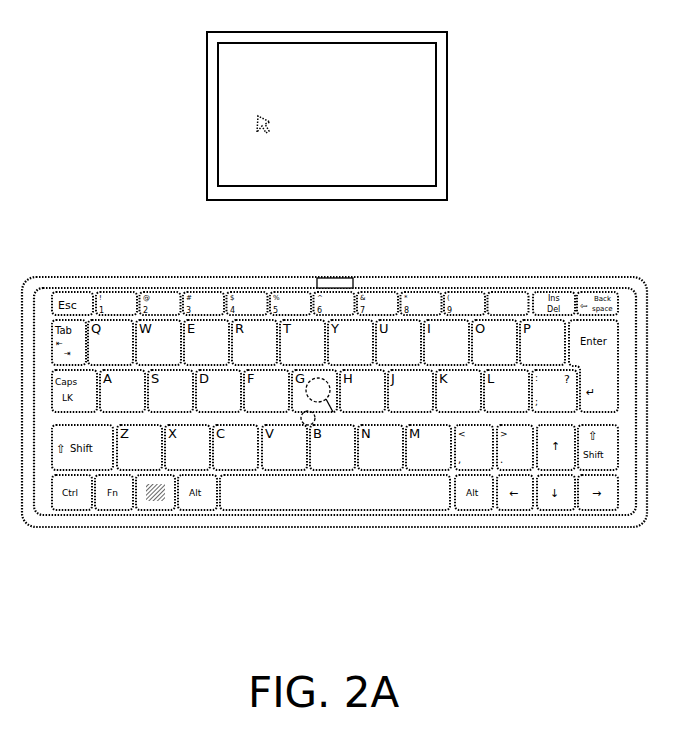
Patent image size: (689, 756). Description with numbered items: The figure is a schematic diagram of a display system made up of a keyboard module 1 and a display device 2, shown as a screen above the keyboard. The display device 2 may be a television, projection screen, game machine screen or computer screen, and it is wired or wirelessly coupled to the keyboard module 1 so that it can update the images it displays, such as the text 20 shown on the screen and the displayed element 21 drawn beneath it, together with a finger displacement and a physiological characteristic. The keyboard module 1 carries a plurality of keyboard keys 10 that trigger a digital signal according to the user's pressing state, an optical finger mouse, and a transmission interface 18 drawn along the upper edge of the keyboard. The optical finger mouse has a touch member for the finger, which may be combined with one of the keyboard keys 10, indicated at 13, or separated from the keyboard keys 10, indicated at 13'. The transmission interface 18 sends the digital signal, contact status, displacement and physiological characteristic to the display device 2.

The keyboard module 1 is at (647, 332).
The display device 2 is at (447, 57).
The keyboard keys 10 is at (508, 308).
The touch member combined with a keyboard key 13 is at (329, 478).
The touch member separated from the keyboard keys 13' is at (290, 494).
The transmission interface 18 is at (323, 277).
The text 20 is at (228, 60).
The cursor 21 is at (257, 127).